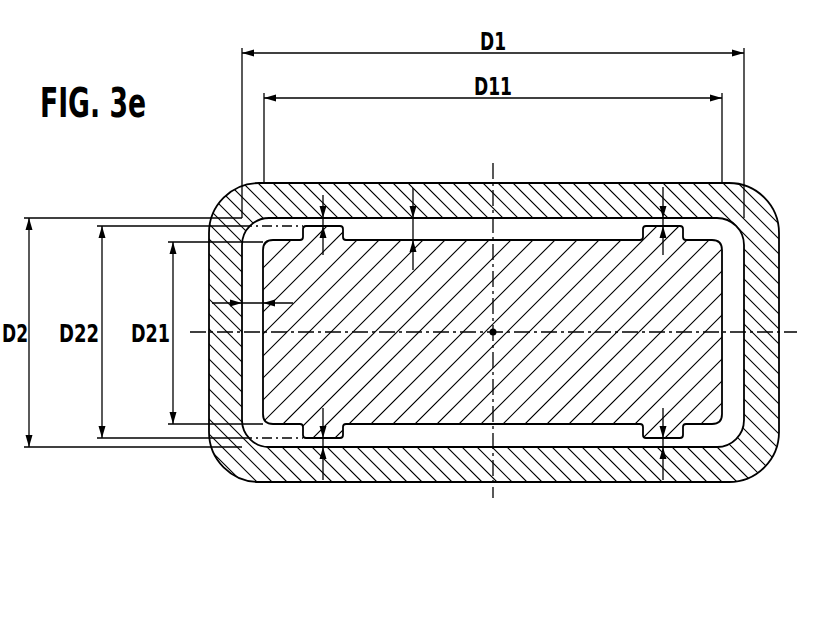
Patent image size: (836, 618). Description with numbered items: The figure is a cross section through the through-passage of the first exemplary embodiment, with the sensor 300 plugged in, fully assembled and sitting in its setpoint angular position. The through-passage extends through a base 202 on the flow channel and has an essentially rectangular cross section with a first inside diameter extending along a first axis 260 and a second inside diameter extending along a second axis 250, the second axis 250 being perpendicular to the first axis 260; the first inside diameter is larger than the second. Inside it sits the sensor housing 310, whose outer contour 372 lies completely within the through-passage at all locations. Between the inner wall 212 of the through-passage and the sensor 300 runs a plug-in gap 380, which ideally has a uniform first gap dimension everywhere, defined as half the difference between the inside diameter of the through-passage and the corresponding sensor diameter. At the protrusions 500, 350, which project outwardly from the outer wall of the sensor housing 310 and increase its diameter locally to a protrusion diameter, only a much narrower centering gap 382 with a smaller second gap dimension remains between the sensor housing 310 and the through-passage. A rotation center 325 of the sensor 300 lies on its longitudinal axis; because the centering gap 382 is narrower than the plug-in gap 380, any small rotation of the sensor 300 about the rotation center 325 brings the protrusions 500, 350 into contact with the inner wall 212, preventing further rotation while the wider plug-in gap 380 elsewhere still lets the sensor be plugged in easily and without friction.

The base 202 is at (262, 463).
The inner wall 212 is at (551, 447).
The second axis 250 is at (495, 172).
The first axis 260 is at (579, 332).
The sensor 300 is at (442, 360).
The sensor housing 310 is at (442, 360).
The rotation center 325 is at (493, 333).
The protrusion 350 is at (304, 506).
The outer contour 372 is at (450, 427).
The plug-in gap 380 is at (322, 204).
The centering gap 382 is at (338, 226).
The protrusion 500 is at (313, 431).